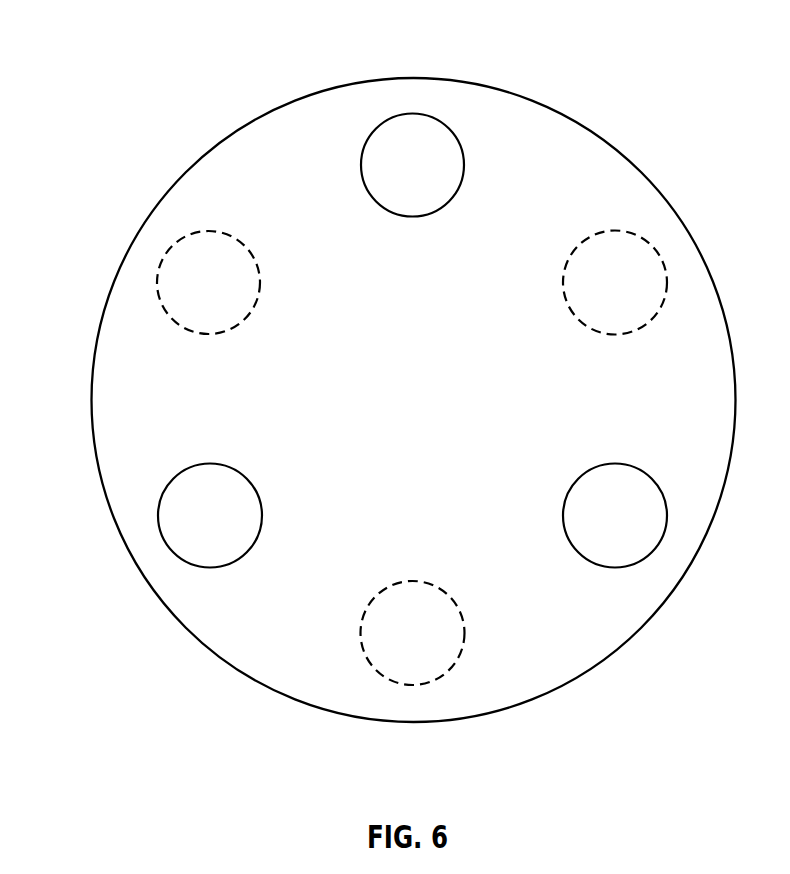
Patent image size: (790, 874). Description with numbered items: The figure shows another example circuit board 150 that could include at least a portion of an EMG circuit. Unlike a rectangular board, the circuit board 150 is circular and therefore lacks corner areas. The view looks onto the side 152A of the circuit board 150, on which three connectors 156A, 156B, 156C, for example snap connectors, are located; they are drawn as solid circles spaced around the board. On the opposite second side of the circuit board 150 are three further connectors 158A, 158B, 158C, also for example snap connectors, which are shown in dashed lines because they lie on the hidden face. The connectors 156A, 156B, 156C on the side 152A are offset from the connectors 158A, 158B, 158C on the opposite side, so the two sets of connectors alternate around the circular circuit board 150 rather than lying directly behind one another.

The circuit board 150 is at (117, 58).
The side of the circuit board 152A is at (236, 155).
The connector 156A is at (428, 140).
The connector 156B is at (238, 472).
The connector 156C is at (573, 490).
The connector 158A is at (238, 242).
The connector 158B is at (368, 612).
The connector 158C is at (587, 242).